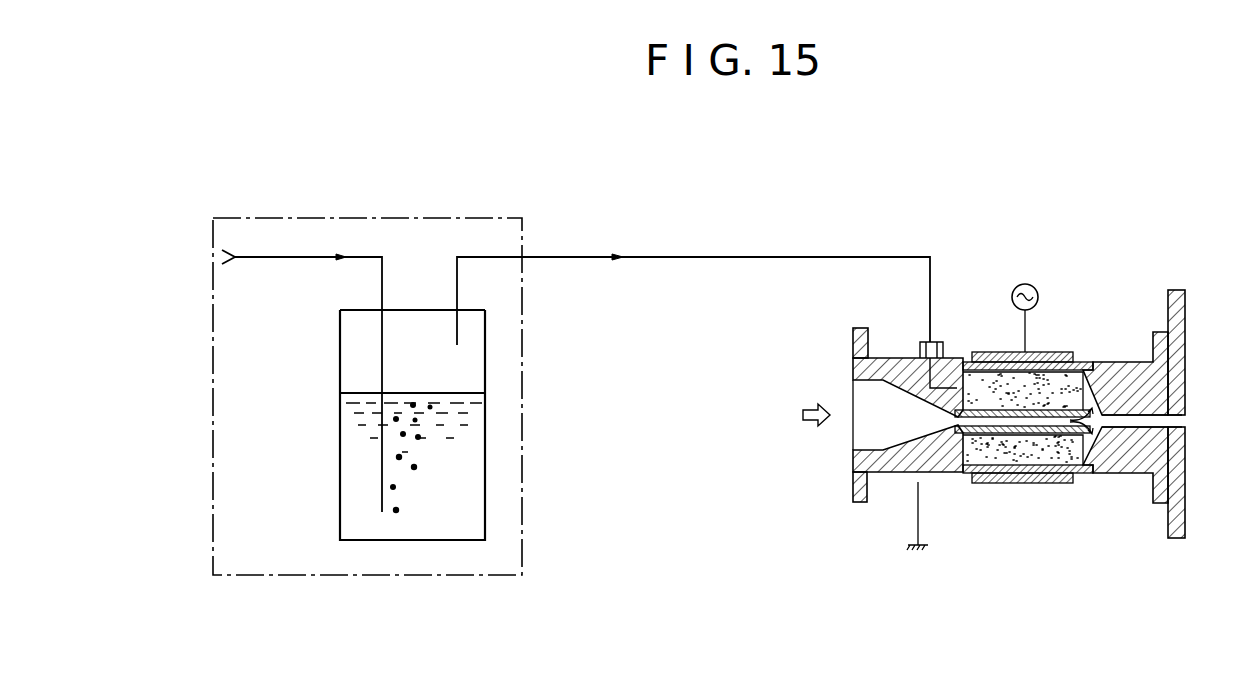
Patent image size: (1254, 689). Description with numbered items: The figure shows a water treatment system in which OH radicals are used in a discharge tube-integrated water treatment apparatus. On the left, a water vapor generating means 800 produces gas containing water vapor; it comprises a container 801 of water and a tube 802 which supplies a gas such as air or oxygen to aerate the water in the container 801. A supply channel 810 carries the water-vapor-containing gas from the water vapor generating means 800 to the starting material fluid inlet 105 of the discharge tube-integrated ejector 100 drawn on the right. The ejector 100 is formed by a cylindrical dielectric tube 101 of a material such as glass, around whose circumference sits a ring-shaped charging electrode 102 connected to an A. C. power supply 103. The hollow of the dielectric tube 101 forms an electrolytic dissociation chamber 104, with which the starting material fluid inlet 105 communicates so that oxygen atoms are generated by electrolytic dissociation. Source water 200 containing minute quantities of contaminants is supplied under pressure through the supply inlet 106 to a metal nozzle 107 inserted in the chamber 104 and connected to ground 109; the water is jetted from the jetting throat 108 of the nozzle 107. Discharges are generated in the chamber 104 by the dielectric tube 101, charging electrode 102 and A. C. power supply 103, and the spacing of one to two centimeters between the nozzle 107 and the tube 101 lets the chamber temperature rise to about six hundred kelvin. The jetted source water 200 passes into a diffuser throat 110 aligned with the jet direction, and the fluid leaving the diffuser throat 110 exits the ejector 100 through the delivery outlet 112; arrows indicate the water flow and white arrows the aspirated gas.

The discharge tube-integrated ejector 100 is at (1126, 362).
The dielectric tube 101 is at (1080, 362).
The charging electrode 102 is at (996, 352).
The A. C. power supply 103 is at (1035, 284).
The electrolytic dissociation chamber 104 is at (965, 483).
The starting material fluid inlet 105 is at (932, 340).
The supply inlet 106 is at (850, 430).
The nozzle 107 is at (985, 448).
The jetting throat 108 is at (1018, 432).
The ground 109 is at (906, 562).
The diffuser throat 110 is at (1133, 420).
The delivery outlet 112 is at (1185, 425).
The source water 200 is at (807, 420).
The water vapor generating means 800 is at (453, 218).
The container 801 is at (485, 458).
The tube 802 is at (323, 253).
The supply channel 810 is at (722, 257).